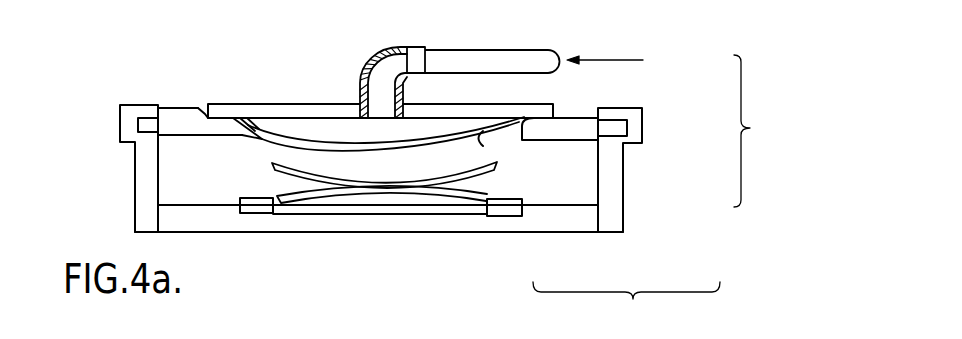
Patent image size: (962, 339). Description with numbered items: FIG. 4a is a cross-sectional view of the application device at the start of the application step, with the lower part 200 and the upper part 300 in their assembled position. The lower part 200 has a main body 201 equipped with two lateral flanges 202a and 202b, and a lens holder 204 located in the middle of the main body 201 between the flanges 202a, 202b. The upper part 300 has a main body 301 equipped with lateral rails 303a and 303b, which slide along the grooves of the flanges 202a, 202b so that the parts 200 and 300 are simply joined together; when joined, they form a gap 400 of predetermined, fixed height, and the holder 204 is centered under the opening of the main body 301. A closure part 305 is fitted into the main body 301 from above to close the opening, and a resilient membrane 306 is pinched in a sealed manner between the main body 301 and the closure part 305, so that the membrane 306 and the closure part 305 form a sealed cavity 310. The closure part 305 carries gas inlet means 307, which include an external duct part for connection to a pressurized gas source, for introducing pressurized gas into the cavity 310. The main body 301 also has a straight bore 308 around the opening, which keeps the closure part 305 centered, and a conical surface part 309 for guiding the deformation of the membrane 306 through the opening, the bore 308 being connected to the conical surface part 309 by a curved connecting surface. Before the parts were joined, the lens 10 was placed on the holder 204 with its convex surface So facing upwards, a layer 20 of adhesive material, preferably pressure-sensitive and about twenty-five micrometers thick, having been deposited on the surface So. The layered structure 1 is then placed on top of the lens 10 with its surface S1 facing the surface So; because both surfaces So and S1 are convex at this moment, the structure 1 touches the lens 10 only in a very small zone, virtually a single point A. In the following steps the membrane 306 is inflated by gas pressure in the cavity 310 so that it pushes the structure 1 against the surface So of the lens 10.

The layered structure 1 is at (499, 166).
The lens 10 is at (477, 200).
The layer of adhesive material 20 is at (443, 192).
The lower part 200 is at (626, 308).
The main body 201 is at (582, 218).
The lateral flange 202a is at (612, 213).
The lateral flange 202b is at (143, 217).
The lens holder 204 is at (512, 210).
The upper part 300 is at (769, 131).
The main body 301 is at (553, 120).
The lateral rail 303a is at (610, 127).
The lateral rail 303b is at (147, 122).
The closure part 305 is at (510, 110).
The resilient membrane 306 is at (477, 140).
The gas inlet means 307 is at (510, 62).
The straight bore 308 is at (199, 112).
The conical surface part 309 is at (243, 135).
The sealed cavity 310 is at (237, 127).
The gap 400 is at (387, 170).
The contact point A is at (390, 183).
The surface of the layered structure S1 is at (272, 180).
The convex surface of the lens So is at (300, 188).